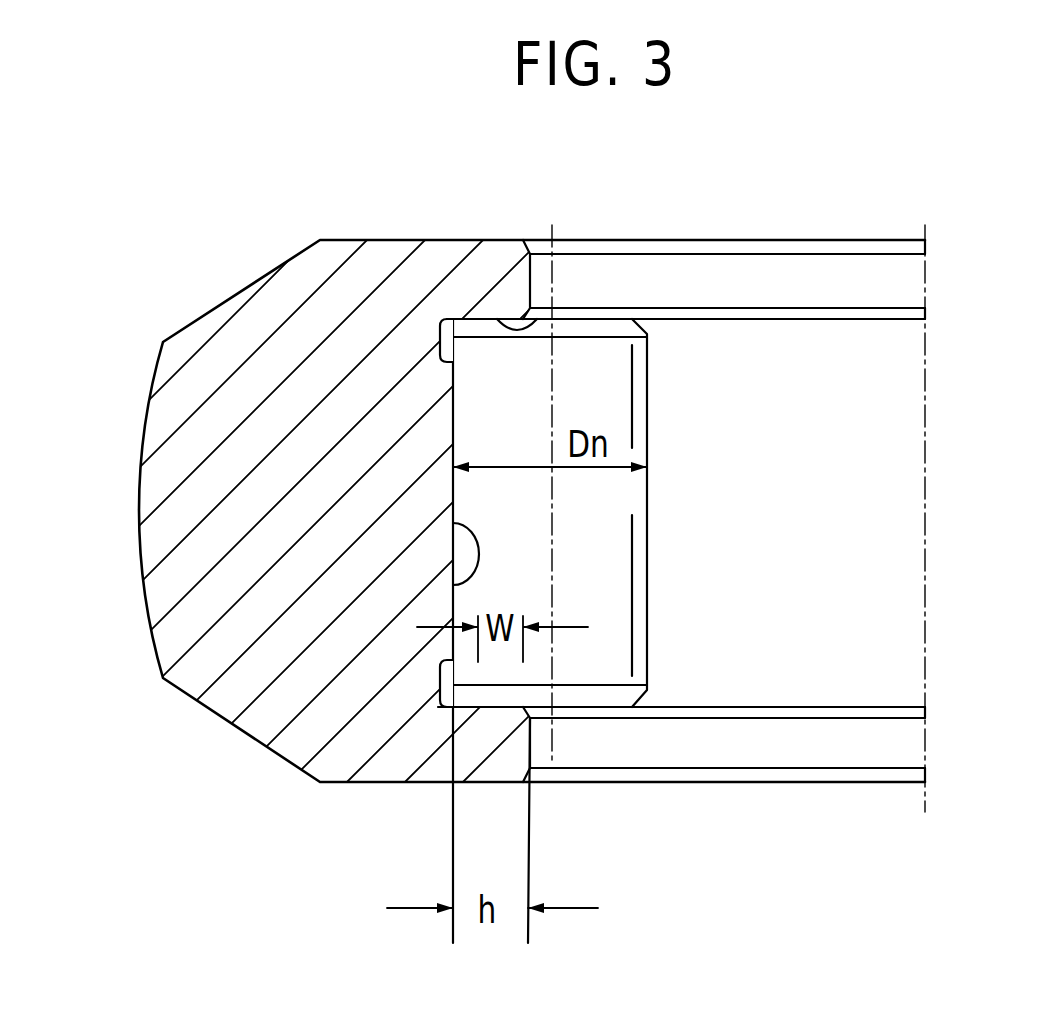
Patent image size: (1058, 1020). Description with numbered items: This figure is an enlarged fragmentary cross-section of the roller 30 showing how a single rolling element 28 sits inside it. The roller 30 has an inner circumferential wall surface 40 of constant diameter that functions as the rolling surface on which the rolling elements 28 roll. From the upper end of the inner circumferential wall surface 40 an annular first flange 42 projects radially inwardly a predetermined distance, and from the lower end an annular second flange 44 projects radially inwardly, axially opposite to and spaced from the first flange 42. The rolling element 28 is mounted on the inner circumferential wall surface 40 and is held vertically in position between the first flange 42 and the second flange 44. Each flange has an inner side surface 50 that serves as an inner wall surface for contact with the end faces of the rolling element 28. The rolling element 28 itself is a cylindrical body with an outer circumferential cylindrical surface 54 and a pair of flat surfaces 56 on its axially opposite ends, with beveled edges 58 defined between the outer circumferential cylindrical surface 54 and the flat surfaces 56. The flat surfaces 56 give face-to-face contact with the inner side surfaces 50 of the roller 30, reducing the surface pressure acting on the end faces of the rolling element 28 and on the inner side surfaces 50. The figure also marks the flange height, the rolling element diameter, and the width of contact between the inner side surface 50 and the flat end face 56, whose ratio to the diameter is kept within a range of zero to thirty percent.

The roller 30 is at (148, 413).
The inner circumferential wall surface 40 is at (453, 585).
The first flange 42 is at (498, 262).
The second flange 44 is at (496, 766).
The rolling element 28 is at (630, 515).
The inner side surface 50 is at (526, 324).
The outer circumferential cylindrical surface 54 is at (648, 617).
The flat surface 56 is at (596, 318).
The beveled edge 58 is at (648, 318).